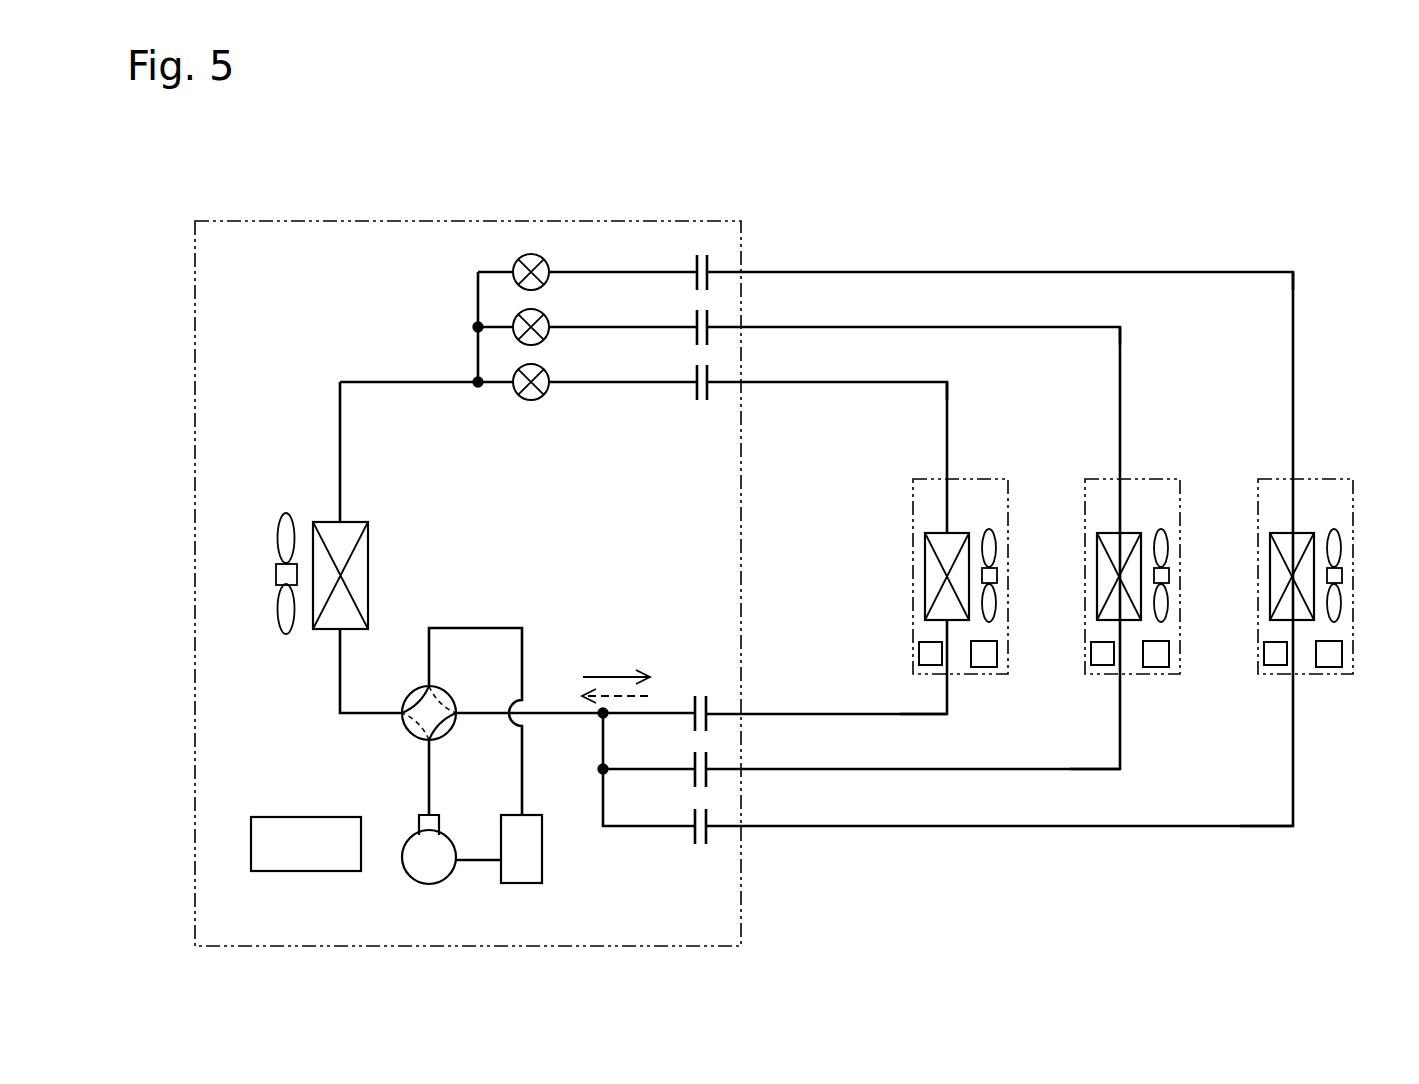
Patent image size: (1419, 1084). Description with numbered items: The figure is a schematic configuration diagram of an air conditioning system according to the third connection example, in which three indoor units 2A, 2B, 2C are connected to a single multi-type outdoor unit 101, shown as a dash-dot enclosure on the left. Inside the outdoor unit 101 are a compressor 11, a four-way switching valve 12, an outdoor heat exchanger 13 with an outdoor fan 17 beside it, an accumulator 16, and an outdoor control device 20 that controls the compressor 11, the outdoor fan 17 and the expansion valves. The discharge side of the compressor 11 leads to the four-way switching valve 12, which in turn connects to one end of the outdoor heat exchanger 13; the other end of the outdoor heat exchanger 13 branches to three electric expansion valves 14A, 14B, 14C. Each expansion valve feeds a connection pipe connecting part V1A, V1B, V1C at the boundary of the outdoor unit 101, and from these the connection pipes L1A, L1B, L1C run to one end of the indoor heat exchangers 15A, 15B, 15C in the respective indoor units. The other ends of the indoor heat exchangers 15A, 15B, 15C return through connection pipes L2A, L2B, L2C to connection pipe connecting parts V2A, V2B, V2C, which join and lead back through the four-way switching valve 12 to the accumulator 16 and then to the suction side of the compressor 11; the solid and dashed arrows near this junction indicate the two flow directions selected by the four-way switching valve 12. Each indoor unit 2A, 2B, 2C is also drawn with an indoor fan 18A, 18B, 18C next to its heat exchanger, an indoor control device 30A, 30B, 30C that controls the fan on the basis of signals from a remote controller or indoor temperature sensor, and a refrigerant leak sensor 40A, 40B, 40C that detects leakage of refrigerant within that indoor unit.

The outdoor unit 101 is at (290, 215).
The compressor 11 is at (426, 872).
The four-way switching valve 12 is at (412, 690).
The outdoor heat exchanger 13 is at (365, 540).
The electric expansion valve 14A is at (545, 376).
The electric expansion valve 14B is at (545, 321).
The electric expansion valve 14C is at (545, 266).
The accumulator 16 is at (522, 875).
The outdoor fan 17 is at (276, 572).
The outdoor control device 20 is at (308, 860).
The connection pipe connecting part V1A is at (707, 394).
The connection pipe connecting part V1B is at (707, 339).
The connection pipe connecting part V1C is at (707, 284).
The connection pipe connecting part V2A is at (706, 725).
The connection pipe connecting part V2B is at (706, 781).
The connection pipe connecting part V2C is at (706, 838).
The connection pipe L1A is at (947, 378).
The connection pipe L1B is at (1120, 325).
The connection pipe L1C is at (1293, 270).
The connection pipe L2A is at (893, 716).
The connection pipe L2B is at (1066, 771).
The connection pipe L2C is at (1238, 828).
The indoor unit 2A is at (970, 476).
The indoor unit 2B is at (1142, 476).
The indoor unit 2C is at (1315, 476).
The indoor heat exchanger 15A is at (925, 572).
The indoor heat exchanger 15B is at (1097, 572).
The indoor heat exchanger 15C is at (1270, 572).
The indoor fan 18A is at (997, 575).
The indoor fan 18B is at (1169, 575).
The indoor fan 18C is at (1342, 575).
The refrigerant leak sensor 40A is at (919, 655).
The refrigerant leak sensor 40B is at (1091, 655).
The refrigerant leak sensor 40C is at (1264, 655).
The indoor control device 30A is at (981, 667).
The indoor control device 30B is at (1153, 667).
The indoor control device 30C is at (1326, 667).